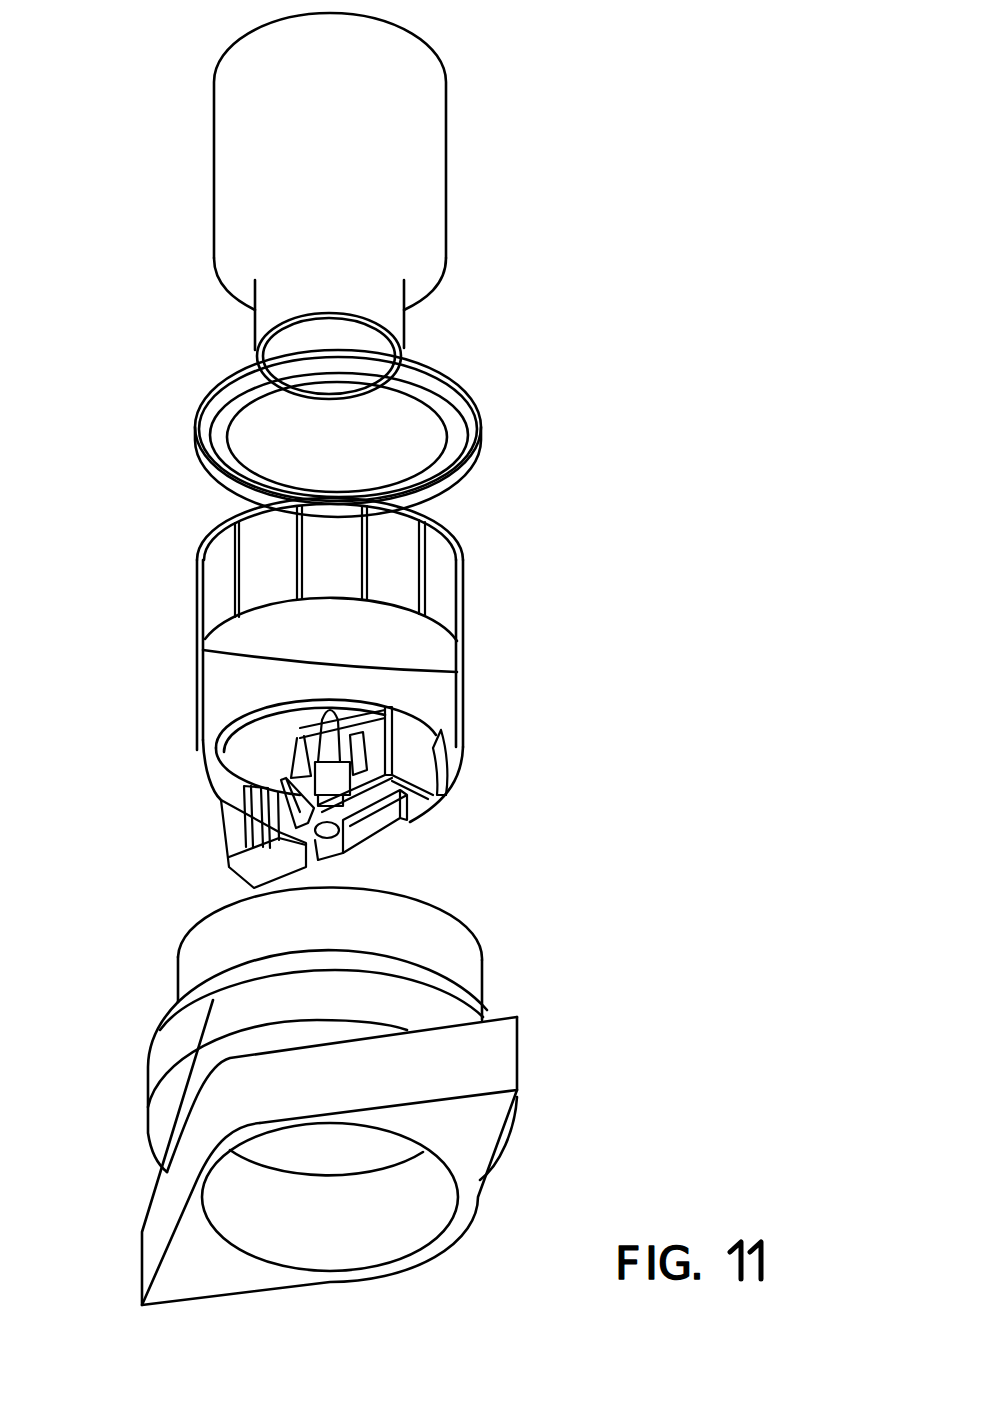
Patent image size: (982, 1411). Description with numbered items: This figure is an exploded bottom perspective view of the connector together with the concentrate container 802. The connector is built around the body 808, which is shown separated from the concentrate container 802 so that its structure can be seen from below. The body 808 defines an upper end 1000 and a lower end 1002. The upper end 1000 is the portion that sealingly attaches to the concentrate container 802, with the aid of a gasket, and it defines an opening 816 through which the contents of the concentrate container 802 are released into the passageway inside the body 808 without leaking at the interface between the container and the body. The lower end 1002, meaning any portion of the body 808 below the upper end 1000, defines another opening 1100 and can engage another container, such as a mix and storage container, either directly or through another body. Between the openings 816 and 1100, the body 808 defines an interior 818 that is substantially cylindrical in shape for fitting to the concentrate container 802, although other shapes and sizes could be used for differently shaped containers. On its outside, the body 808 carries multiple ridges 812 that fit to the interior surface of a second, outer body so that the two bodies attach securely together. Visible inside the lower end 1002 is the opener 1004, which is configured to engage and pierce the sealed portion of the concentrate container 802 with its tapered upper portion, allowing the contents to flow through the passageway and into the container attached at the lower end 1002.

The concentrate container 802 is at (446, 173).
The opening 816 is at (382, 337).
The upper end 1000 is at (457, 553).
The ridges 812 is at (237, 562).
The body 808 is at (457, 680).
The lower end 1002 is at (457, 747).
The interior 818 is at (326, 709).
The opener 1004 is at (326, 716).
The opening 1100 is at (212, 798).